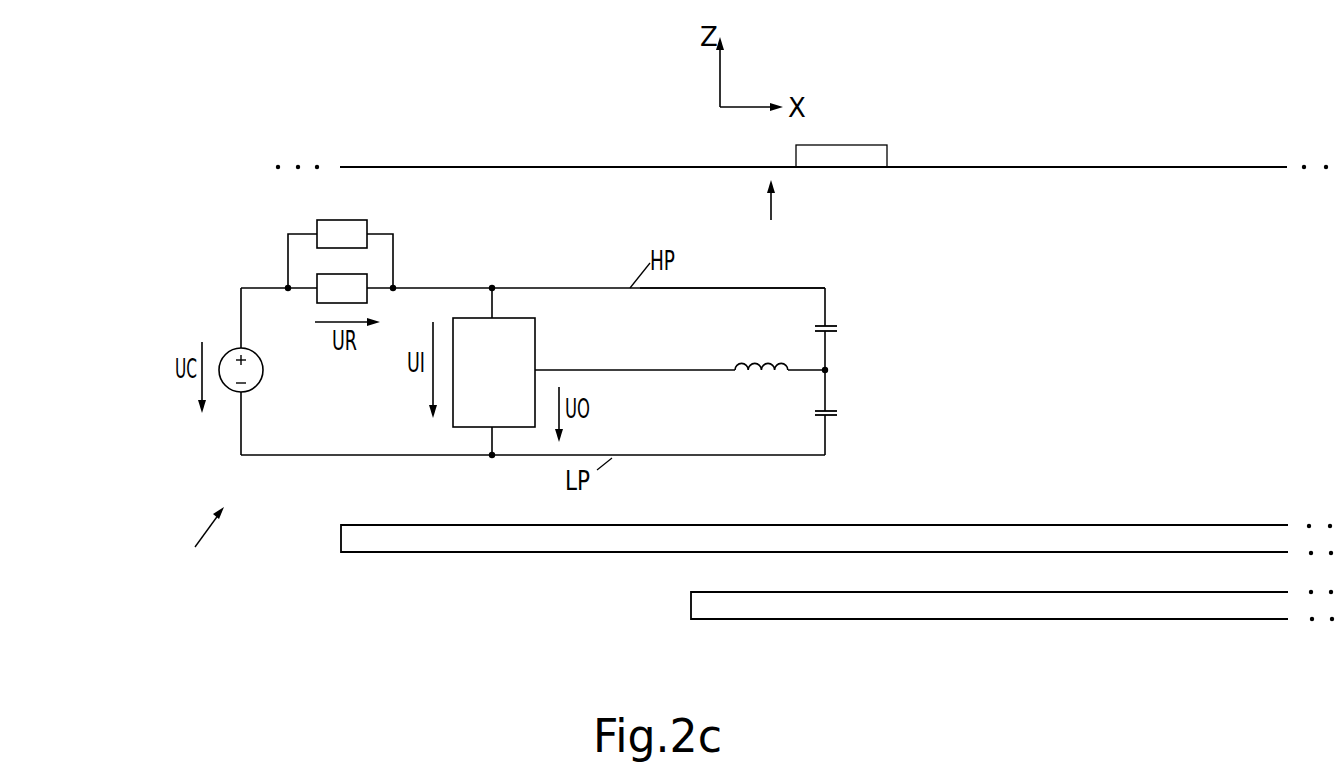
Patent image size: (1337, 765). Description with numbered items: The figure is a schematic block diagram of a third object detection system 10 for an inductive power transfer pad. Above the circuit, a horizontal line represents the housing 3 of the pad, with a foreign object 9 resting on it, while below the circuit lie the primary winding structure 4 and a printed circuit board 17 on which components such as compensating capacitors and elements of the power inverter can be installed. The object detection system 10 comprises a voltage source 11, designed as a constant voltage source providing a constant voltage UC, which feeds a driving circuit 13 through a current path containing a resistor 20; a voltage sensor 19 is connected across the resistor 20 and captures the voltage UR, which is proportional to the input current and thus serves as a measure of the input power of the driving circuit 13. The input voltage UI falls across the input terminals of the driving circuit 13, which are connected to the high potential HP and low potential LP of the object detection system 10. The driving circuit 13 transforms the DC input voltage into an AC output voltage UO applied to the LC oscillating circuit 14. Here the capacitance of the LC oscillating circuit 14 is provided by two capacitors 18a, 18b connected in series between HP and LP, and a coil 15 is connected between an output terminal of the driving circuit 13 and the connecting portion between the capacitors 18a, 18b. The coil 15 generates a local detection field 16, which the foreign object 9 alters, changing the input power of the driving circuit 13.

The housing 3 is at (1135, 167).
The primary winding structure 4 is at (1062, 533).
The foreign object 9 is at (863, 152).
The object detection system 10 is at (192, 540).
The voltage source 11 is at (255, 353).
The driving circuit 13 is at (508, 318).
The LC oscillating circuit 14 is at (783, 287).
The coil 15 is at (758, 367).
The detection field 16 is at (787, 202).
The printed circuit board 17 is at (1070, 598).
The first capacitor 18a is at (835, 325).
The second capacitor 18b is at (853, 392).
The voltage sensor 19 is at (348, 239).
The resistor 20 is at (355, 284).